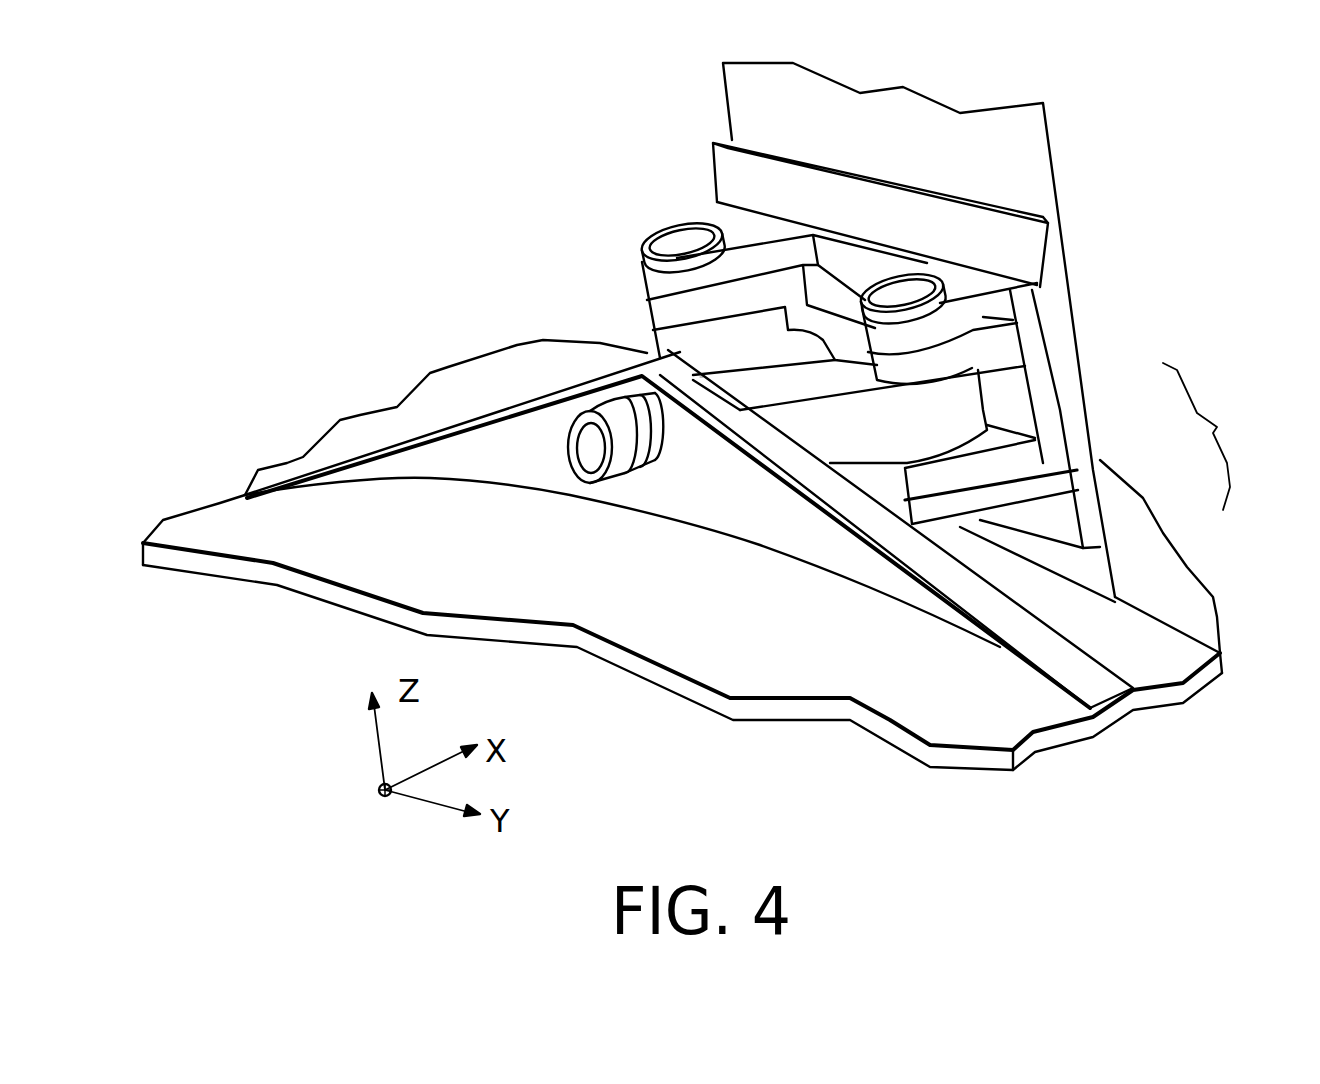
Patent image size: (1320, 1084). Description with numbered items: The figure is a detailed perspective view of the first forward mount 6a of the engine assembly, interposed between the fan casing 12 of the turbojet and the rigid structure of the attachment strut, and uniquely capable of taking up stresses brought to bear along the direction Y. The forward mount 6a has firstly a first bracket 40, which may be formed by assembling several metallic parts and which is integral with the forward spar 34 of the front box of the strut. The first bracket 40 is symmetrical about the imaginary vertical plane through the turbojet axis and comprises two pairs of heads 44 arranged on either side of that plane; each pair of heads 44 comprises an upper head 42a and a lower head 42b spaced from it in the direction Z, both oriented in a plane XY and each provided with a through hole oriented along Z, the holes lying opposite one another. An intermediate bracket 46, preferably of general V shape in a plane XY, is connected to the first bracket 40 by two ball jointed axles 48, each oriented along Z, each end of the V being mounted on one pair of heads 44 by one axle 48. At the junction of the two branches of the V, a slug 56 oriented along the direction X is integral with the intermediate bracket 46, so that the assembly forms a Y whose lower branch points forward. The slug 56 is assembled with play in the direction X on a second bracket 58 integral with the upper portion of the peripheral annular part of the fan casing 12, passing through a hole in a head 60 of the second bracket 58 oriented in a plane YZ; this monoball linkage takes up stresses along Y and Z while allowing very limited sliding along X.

The fan casing 12 is at (230, 523).
The forward spar 34 is at (1033, 152).
The first bracket 40 is at (1045, 272).
The upper head 42a is at (1017, 323).
The lower head 42b is at (1033, 483).
The pair of heads 44 is at (662, 210).
The intermediate bracket 46 is at (850, 430).
The ball jointed axle 48 is at (657, 240).
The slug 56 is at (600, 482).
The second bracket 58 is at (856, 570).
The head 60 is at (430, 465).
The first forward mount 6a is at (536, 286).